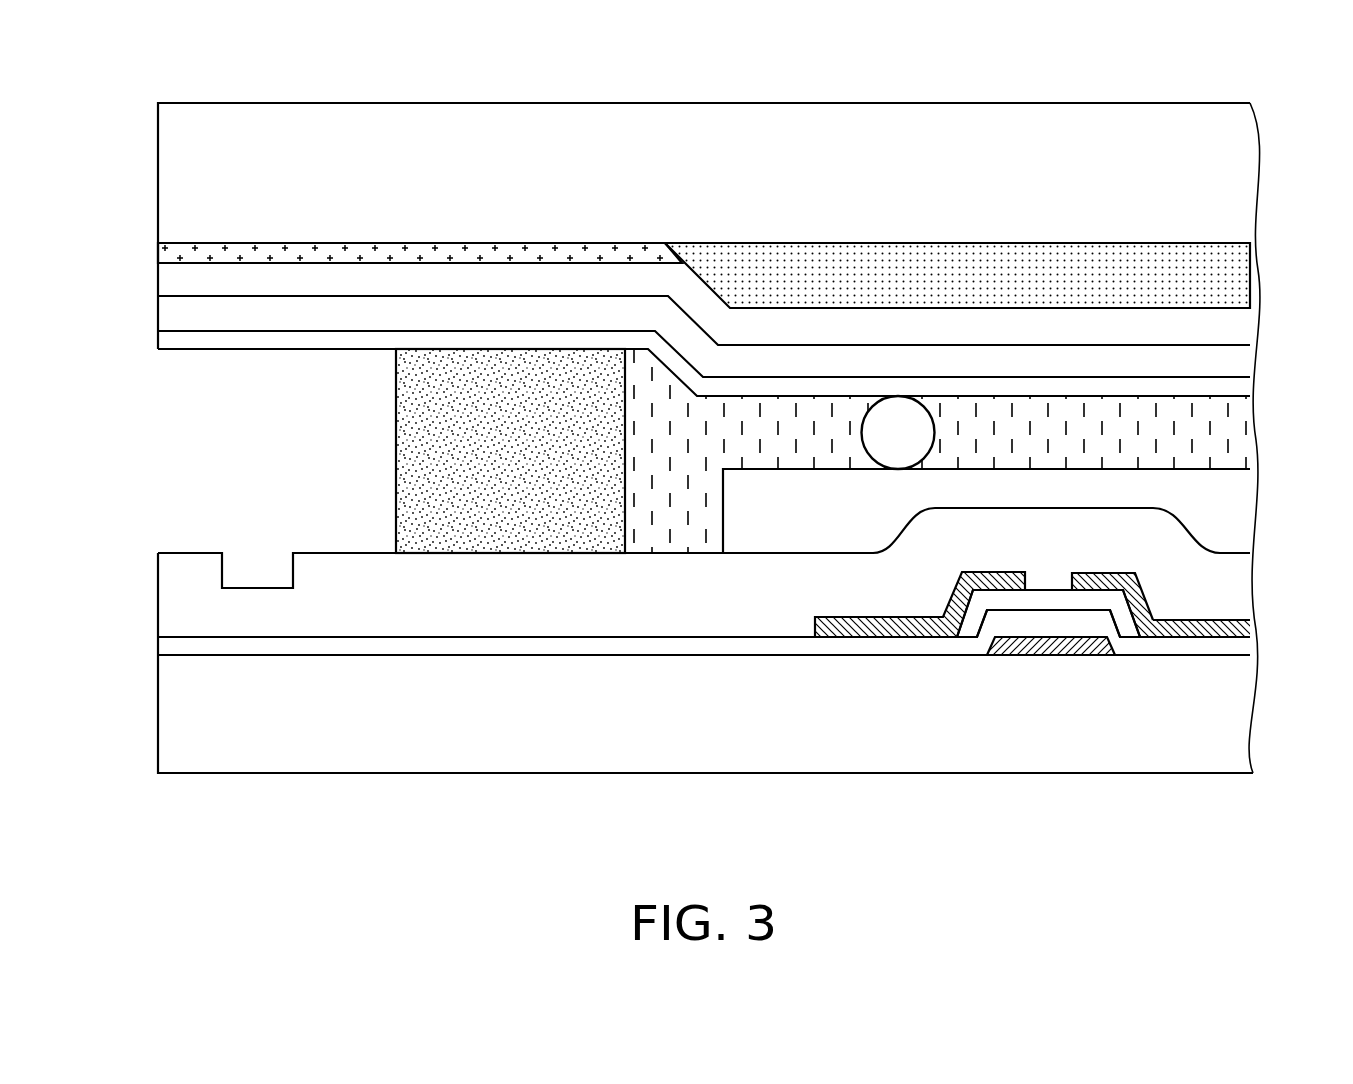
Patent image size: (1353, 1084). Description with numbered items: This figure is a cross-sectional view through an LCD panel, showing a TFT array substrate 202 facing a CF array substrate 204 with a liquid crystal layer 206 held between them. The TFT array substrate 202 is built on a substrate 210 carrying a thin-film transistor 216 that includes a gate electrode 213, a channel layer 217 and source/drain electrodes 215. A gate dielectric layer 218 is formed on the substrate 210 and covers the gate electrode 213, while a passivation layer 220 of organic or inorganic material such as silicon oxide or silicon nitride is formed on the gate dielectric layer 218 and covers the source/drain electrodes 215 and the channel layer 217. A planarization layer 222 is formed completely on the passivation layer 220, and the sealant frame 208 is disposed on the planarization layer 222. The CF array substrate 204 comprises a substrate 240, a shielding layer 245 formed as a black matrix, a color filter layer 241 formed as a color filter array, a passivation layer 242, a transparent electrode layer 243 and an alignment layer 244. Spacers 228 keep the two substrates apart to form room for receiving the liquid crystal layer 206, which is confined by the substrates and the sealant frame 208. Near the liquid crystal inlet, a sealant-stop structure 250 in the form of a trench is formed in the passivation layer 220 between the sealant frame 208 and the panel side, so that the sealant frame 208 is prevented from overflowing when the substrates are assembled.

The CF array substrate 204 is at (126, 203).
The TFT array substrate 202 is at (118, 728).
The substrate 240 is at (1237, 163).
The color filter layer 241 is at (1237, 275).
The passivation layer 242 is at (1237, 325).
The transparent electrode layer 243 is at (1237, 360).
The alignment layer 244 is at (1237, 392).
The shielding layer 245 is at (158, 251).
The liquid crystal layer 206 is at (1237, 440).
The sealant frame 208 is at (396, 403).
The spacer 228 is at (900, 433).
The planarization layer 222 is at (1237, 535).
The sealant-stop structure 250 is at (257, 563).
The passivation layer 220 is at (735, 590).
The gate dielectric layer 218 is at (512, 645).
The substrate 210 is at (862, 762).
The gate electrode 213 is at (1045, 656).
The channel layer 217 is at (1132, 626).
The source/drain electrodes 215 is at (1195, 730).
The thin-film transistor 216 is at (1032, 734).